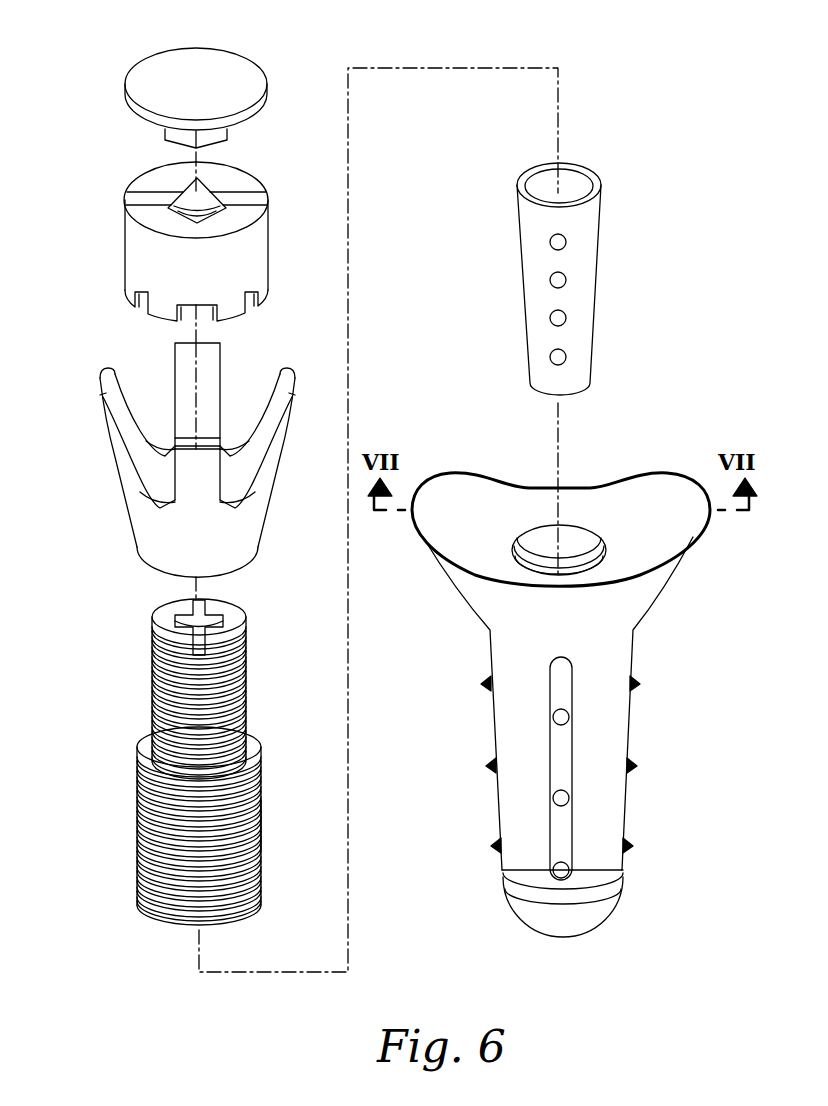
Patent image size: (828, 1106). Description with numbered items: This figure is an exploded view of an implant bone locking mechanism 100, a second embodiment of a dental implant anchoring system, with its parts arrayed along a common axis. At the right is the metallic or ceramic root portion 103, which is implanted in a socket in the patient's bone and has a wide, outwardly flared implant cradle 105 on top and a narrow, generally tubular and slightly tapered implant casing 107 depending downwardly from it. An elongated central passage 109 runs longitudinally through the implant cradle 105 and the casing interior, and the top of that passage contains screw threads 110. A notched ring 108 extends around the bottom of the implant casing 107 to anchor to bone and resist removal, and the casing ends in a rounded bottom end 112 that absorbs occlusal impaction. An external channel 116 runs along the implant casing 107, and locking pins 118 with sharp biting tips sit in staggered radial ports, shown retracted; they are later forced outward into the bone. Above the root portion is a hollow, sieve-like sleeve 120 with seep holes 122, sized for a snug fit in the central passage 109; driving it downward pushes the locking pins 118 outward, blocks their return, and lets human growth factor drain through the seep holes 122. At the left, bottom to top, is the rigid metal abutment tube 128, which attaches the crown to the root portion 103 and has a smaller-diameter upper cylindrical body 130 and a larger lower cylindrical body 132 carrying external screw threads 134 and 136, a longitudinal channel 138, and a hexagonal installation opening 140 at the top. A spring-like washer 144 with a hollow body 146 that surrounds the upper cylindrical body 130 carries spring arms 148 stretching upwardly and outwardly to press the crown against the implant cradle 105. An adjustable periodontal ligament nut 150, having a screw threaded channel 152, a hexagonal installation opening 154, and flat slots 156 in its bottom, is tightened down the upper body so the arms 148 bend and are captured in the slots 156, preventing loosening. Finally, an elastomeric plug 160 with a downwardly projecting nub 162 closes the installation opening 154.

The implant bone locking mechanism 100 is at (465, 253).
The root portion 103 is at (565, 710).
The implant cradle 105 is at (448, 580).
The implant casing 107 is at (626, 812).
The notched ring 108 is at (620, 886).
The central passage 109 is at (567, 573).
The screw threads 110 is at (530, 560).
The rounded bottom end 112 is at (573, 937).
The external channel 116 is at (555, 855).
The locking pins 118 is at (482, 683).
The sleeve 120 is at (563, 279).
The seep holes 122 is at (566, 280).
The abutment tube 128 is at (188, 759).
The upper cylindrical body 130 is at (160, 615).
The lower cylindrical body 132 is at (138, 845).
The external screw threads 134 is at (152, 668).
The external screw threads 136 is at (250, 893).
The channel 138 is at (262, 823).
The installation opening 140 is at (215, 617).
The spring-like washer 144 is at (116, 483).
The hollow body 146 is at (266, 520).
The spring arms 148 is at (222, 372).
The adjustable periodontal ligament nut 150 is at (116, 236).
The screw threaded channel 152 is at (192, 206).
The installation opening 154 is at (215, 188).
The flat slots 156 is at (137, 311).
The plug 160 is at (152, 65).
The nub 162 is at (165, 138).